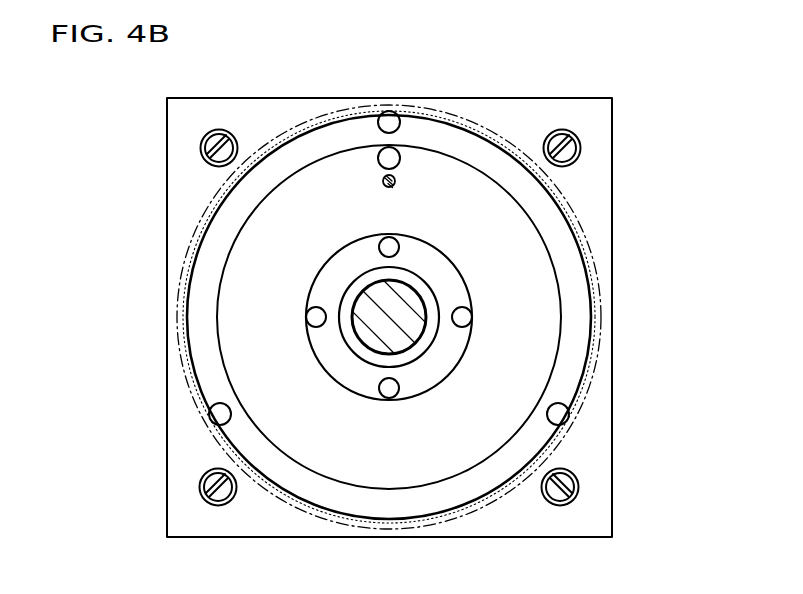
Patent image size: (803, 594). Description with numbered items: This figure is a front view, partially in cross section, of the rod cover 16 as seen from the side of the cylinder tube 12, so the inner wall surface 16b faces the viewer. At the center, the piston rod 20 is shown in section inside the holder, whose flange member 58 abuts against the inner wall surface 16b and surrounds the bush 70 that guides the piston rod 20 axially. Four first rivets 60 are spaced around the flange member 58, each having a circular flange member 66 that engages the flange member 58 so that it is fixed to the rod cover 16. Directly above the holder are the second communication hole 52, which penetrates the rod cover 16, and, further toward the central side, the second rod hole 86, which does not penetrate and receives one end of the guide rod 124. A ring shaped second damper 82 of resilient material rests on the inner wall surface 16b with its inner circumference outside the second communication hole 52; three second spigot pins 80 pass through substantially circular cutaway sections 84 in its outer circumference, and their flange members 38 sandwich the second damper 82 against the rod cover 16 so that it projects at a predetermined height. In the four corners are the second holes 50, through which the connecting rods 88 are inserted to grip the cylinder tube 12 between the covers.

The cylinder tube 12 is at (466, 118).
The rod cover 16 is at (616, 268).
The inner wall surface 16b is at (197, 190).
The piston rod 20 is at (377, 333).
The flange member 38 is at (393, 244).
The second hole 50 is at (574, 153).
The second communication hole 52 is at (380, 160).
The flange member 58 is at (445, 362).
The first rivet 60 is at (390, 332).
The flange member 66 is at (383, 246).
The bush 70 is at (428, 299).
The second spigot pin 80 is at (393, 244).
The second damper 82 is at (517, 208).
The cutaway section 84 is at (399, 104).
The second rod hole 86 is at (381, 202).
The connecting rod 88 is at (430, 322).
The guide rod 124 is at (394, 188).